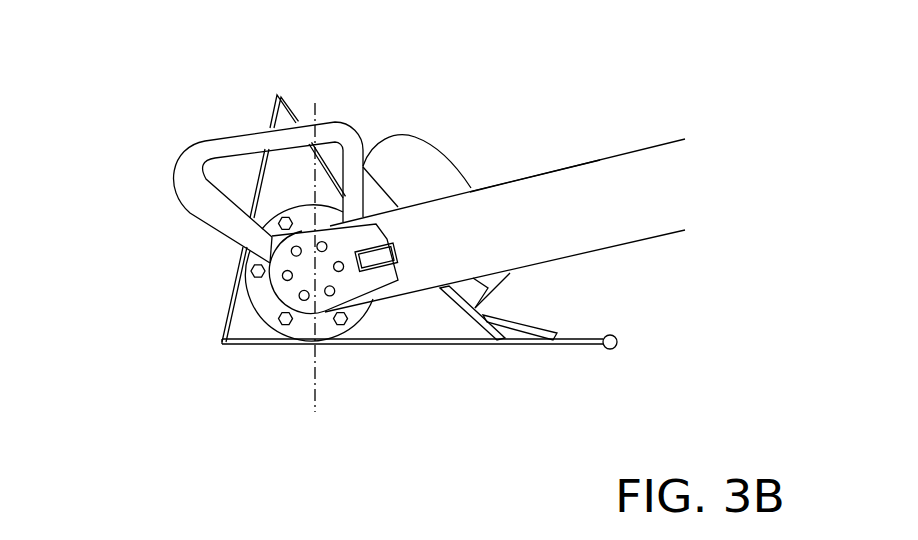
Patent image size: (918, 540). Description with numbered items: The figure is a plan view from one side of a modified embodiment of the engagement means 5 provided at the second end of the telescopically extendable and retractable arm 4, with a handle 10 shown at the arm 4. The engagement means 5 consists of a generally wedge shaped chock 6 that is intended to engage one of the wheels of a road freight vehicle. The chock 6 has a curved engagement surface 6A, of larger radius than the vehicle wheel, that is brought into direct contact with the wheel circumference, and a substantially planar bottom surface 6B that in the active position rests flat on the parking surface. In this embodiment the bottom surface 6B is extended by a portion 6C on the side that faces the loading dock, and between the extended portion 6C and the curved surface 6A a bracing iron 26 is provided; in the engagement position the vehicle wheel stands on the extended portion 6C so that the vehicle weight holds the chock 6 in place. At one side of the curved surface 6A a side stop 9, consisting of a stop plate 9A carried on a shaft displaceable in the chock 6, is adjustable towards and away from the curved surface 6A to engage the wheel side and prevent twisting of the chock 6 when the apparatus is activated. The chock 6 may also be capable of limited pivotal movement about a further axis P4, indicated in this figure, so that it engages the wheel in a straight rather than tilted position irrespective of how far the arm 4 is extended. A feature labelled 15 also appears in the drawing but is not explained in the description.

The arm 4 is at (612, 150).
The engagement means 5 is at (204, 249).
The chock 6 is at (427, 333).
The curved engagement surface 6A is at (288, 108).
The bottom surface 6B is at (260, 343).
The extended portion 6C is at (567, 342).
The side stop 9 is at (427, 123).
The stop plate 9A is at (423, 180).
The handle 10 is at (195, 166).
The arm edge 15 is at (530, 176).
The bracing iron 26 is at (517, 331).
The further axis P4 is at (313, 370).